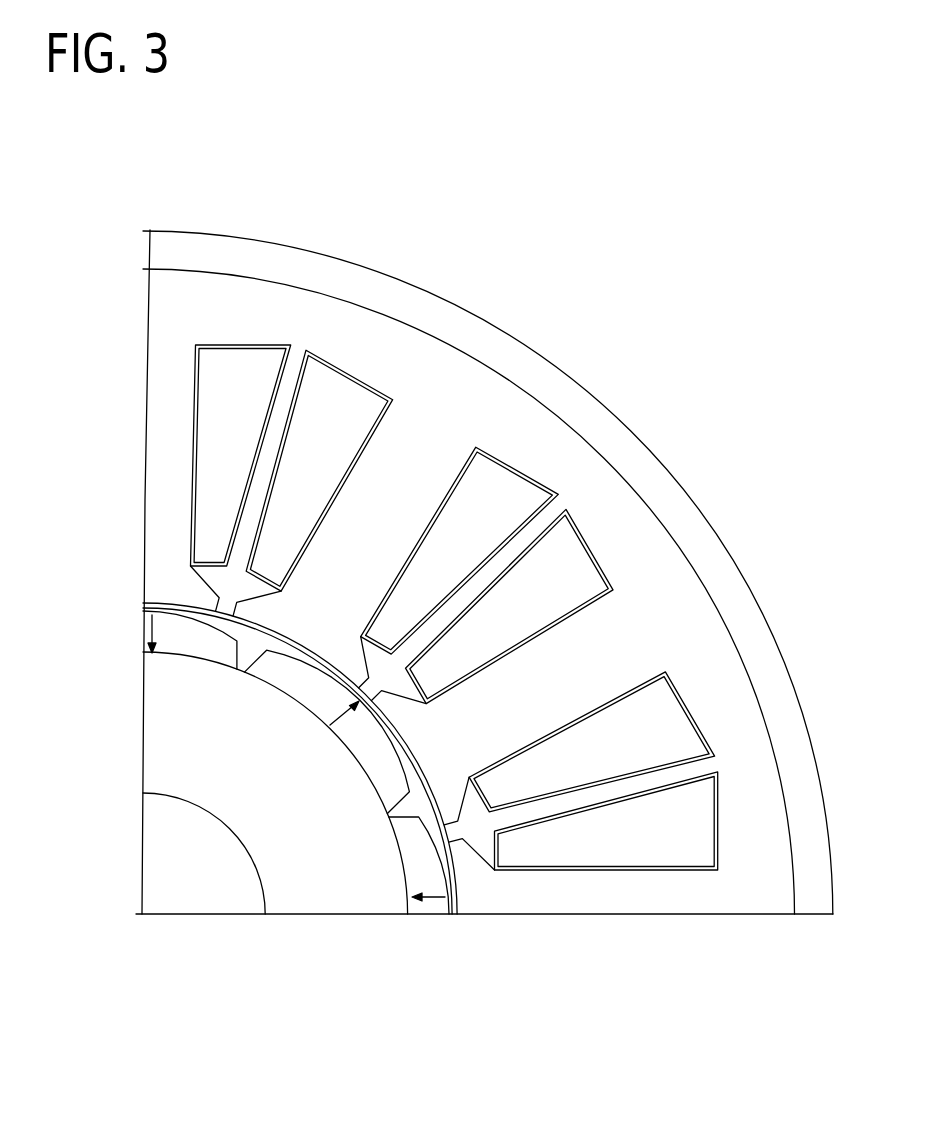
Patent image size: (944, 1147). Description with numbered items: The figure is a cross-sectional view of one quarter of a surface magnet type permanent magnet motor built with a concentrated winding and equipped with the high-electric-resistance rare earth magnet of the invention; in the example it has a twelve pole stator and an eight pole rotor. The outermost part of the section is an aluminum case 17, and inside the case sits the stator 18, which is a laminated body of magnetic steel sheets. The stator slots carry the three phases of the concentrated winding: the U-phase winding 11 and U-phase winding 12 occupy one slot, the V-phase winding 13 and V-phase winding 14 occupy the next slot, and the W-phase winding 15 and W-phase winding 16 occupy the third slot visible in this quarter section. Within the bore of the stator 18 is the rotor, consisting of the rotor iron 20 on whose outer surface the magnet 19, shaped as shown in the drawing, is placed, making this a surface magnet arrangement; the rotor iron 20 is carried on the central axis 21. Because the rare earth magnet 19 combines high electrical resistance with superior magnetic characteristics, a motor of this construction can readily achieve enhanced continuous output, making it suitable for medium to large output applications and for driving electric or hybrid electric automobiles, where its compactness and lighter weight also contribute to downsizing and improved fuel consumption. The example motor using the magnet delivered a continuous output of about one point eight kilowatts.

The U-phase winding 11 is at (241, 455).
The U-phase winding 12 is at (606, 821).
The V-phase winding 13 is at (591, 742).
The V-phase winding 14 is at (510, 606).
The W-phase winding 15 is at (460, 550).
The W-phase winding 16 is at (319, 470).
The aluminum case 17 is at (806, 771).
The stator 18 is at (731, 905).
The magnet 19 is at (428, 905).
The rotor iron 20 is at (334, 905).
The axis 21 is at (204, 905).